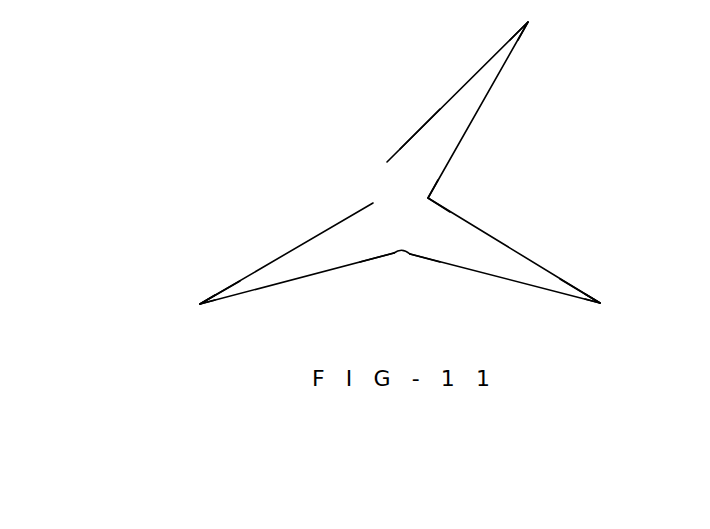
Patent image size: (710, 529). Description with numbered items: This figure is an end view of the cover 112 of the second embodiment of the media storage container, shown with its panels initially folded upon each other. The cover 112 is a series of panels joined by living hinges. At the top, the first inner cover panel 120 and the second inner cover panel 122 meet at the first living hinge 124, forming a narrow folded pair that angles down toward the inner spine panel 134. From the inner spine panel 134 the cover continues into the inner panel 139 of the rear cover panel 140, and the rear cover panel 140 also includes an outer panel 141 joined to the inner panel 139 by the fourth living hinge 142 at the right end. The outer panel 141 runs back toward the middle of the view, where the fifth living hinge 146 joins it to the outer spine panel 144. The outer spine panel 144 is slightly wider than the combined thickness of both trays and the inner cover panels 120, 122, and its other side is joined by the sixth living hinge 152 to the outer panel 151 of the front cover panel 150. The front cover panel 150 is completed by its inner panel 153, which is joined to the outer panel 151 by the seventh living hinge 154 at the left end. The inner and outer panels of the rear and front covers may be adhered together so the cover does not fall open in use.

The cover 112 is at (335, 162).
The first inner cover panel 120 is at (412, 40).
The second inner cover panel 122 is at (490, 88).
The first living hinge 124 is at (528, 22).
The inner spine panel 134 is at (428, 198).
The inner panel 139 is at (513, 242).
The rear cover panel 140 is at (573, 282).
The outer panel 141 is at (523, 283).
The fourth living hinge 142 is at (600, 303).
The outer spine panel 144 is at (402, 249).
The fifth living hinge 146 is at (410, 255).
The front cover panel 150 is at (218, 290).
The outer panel 151 is at (272, 288).
The sixth living hinge 152 is at (392, 255).
The inner panel 153 is at (292, 237).
The seventh living hinge 154 is at (200, 304).